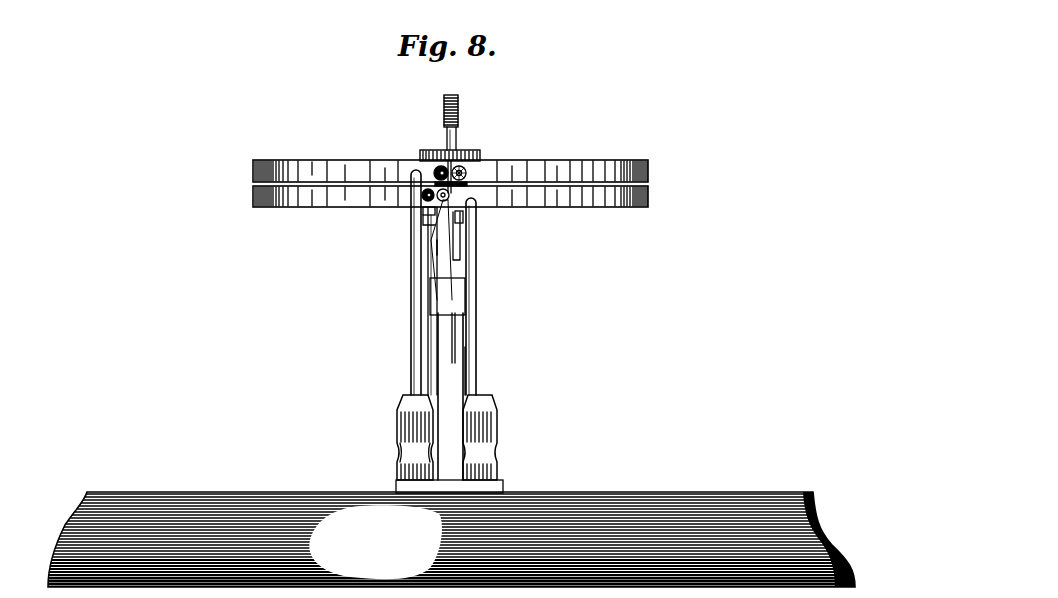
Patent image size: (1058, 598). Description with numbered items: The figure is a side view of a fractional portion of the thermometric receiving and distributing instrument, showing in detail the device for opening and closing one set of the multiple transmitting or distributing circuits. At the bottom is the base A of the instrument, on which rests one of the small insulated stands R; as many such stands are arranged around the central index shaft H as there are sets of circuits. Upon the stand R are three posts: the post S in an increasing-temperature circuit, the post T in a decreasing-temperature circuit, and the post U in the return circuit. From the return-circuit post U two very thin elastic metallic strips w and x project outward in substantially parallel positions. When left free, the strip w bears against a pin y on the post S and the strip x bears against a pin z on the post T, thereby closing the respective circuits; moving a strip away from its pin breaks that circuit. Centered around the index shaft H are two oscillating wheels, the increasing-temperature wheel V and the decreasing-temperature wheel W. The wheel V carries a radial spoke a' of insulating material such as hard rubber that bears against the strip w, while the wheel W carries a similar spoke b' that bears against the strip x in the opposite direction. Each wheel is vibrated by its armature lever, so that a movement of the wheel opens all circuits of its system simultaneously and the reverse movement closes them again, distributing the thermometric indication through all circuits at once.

The base A is at (455, 539).
The stand R is at (503, 486).
The return-circuit post U is at (451, 396).
The increasing-temperature post S is at (414, 325).
The decreasing-temperature post T is at (475, 339).
The increasing-temperature circuit breaking or closing wheel V is at (450, 166).
The decreasing-temperature circuit breaking or closing wheel W is at (450, 209).
The index shaft H is at (451, 144).
The radial spoke a' is at (434, 150).
The gear w' is at (473, 173).
The radial spoke b' is at (410, 208).
The elastic strip x is at (417, 210).
The pin y is at (420, 216).
The pin z is at (470, 218).
The elastic strip w is at (403, 269).